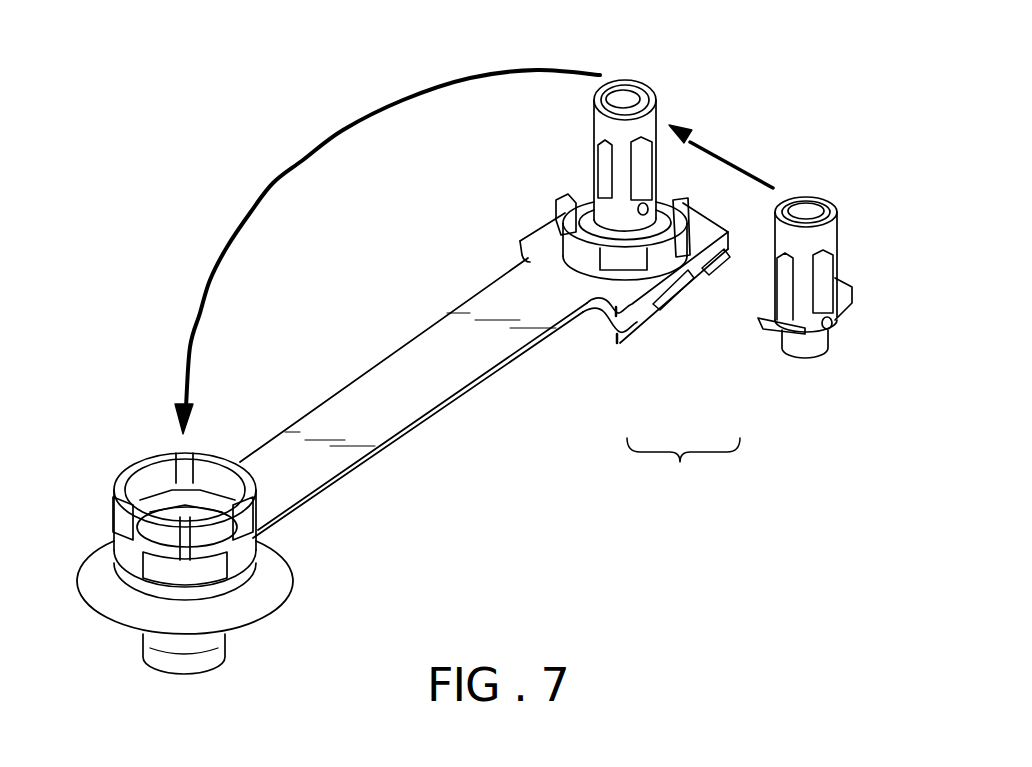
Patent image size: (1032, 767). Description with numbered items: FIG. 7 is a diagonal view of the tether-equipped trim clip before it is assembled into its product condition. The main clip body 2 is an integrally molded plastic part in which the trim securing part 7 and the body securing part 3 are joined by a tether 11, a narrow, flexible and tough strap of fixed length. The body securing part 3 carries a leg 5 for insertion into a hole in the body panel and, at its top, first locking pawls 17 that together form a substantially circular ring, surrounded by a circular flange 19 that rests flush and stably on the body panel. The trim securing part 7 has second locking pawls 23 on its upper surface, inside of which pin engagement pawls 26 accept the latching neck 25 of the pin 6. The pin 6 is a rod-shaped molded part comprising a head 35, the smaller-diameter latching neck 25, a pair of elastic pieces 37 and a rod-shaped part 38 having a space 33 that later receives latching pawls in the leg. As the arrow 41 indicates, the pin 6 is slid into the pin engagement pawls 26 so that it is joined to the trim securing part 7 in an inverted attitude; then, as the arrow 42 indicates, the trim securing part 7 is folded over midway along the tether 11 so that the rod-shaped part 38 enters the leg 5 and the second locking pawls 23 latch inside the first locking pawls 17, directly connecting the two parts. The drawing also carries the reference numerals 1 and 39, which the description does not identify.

The fastening assembly 1 is at (689, 253).
The main clip body 2 is at (611, 314).
The body securing part 3 is at (218, 567).
The leg 5 is at (205, 658).
The pin 6 is at (704, 231).
The trim securing part 7 is at (593, 337).
The tether 11 is at (435, 412).
The first locking pawls 17 is at (115, 530).
The circular flange 19 is at (270, 575).
The second locking pawls 23 is at (565, 206).
The latching neck 25 is at (805, 346).
The pin engagement pawls 26 is at (658, 240).
The space 33 is at (827, 263).
The head 35 is at (817, 354).
The elastic pieces 37 is at (843, 284).
The rod-shaped part 38 is at (603, 159).
The shaft portion 39 is at (787, 243).
The arrow 41 is at (735, 160).
The arrow 42 is at (277, 183).